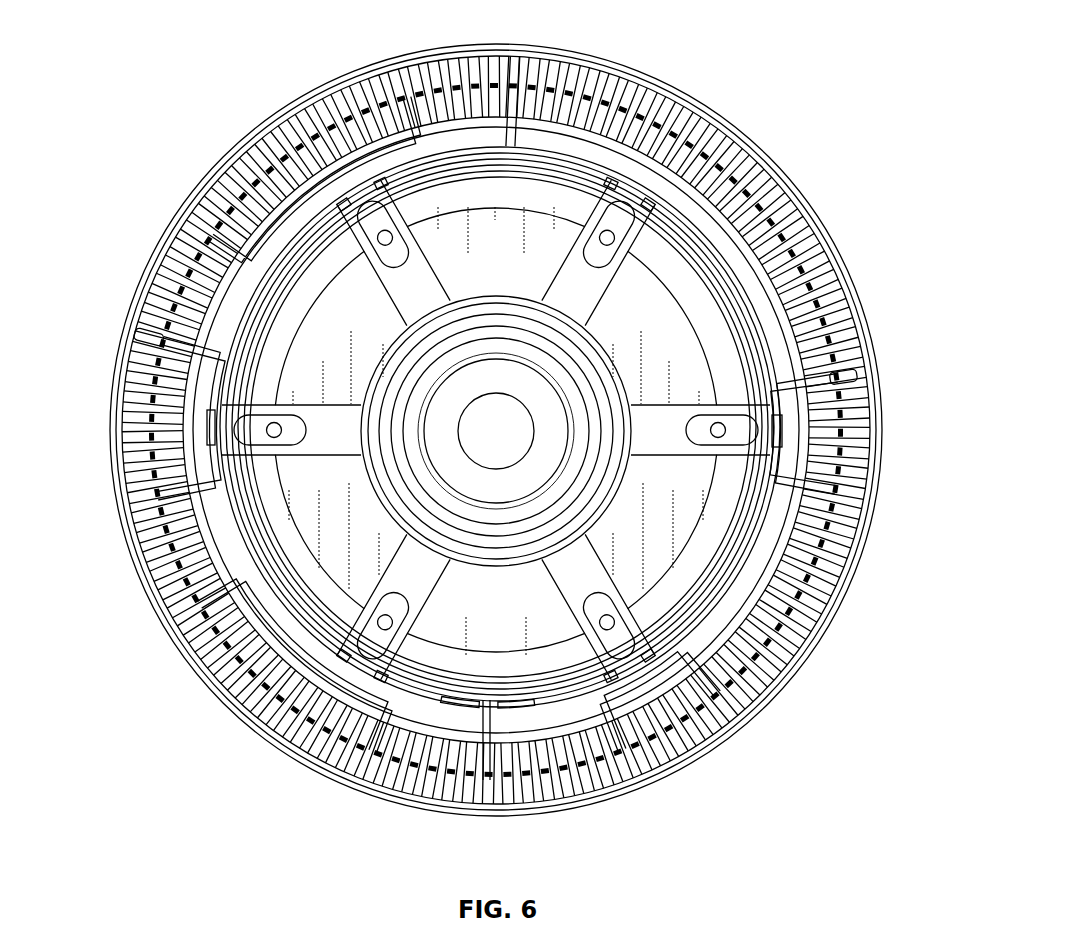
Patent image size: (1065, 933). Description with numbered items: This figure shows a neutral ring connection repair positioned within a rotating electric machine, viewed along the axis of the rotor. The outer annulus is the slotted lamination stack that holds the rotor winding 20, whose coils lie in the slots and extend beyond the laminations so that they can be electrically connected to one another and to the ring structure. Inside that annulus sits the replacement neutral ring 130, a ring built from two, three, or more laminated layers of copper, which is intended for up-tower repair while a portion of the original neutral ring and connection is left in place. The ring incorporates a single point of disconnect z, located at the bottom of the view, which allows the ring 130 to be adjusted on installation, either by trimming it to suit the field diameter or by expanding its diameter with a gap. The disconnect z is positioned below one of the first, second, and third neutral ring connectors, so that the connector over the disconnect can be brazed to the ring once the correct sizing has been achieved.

The rotor winding 20 is at (671, 104).
The neutral ring 130 is at (513, 163).
The single point of disconnect z is at (490, 676).